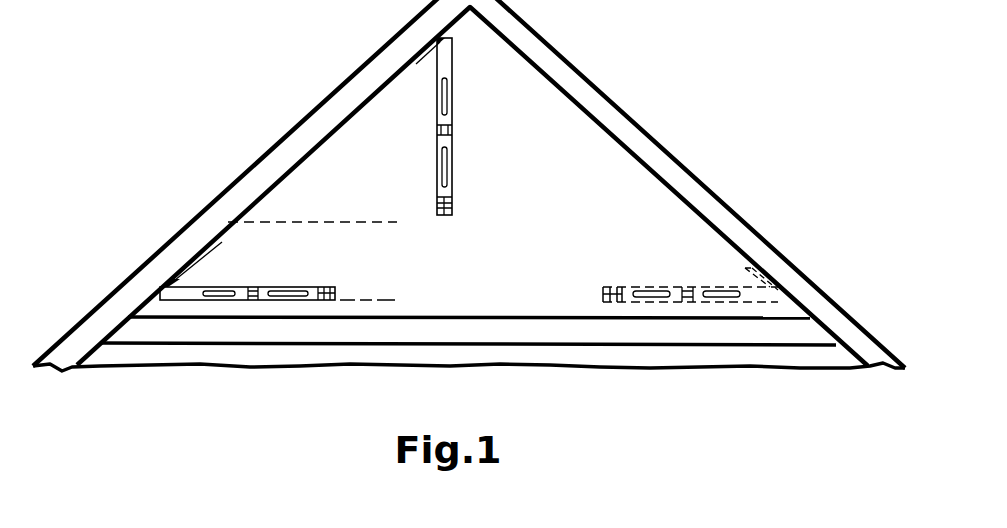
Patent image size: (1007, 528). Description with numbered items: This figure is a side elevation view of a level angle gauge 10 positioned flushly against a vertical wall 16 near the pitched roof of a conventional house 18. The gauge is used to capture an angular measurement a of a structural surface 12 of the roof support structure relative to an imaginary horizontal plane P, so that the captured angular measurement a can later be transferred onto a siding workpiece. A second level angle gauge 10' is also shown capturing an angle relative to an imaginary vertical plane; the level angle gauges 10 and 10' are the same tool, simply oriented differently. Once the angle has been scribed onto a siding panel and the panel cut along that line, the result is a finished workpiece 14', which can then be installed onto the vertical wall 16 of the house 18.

The level angle gauge 10 is at (469, 262).
The level angle gauge 10' is at (475, 126).
The structural surface 12 is at (350, 122).
The finished workpiece 14' is at (469, 356).
The vertical wall 16 is at (504, 199).
The house 18 is at (616, 98).
The imaginary horizontal plane P is at (380, 223).
The angular measurement a is at (327, 145).